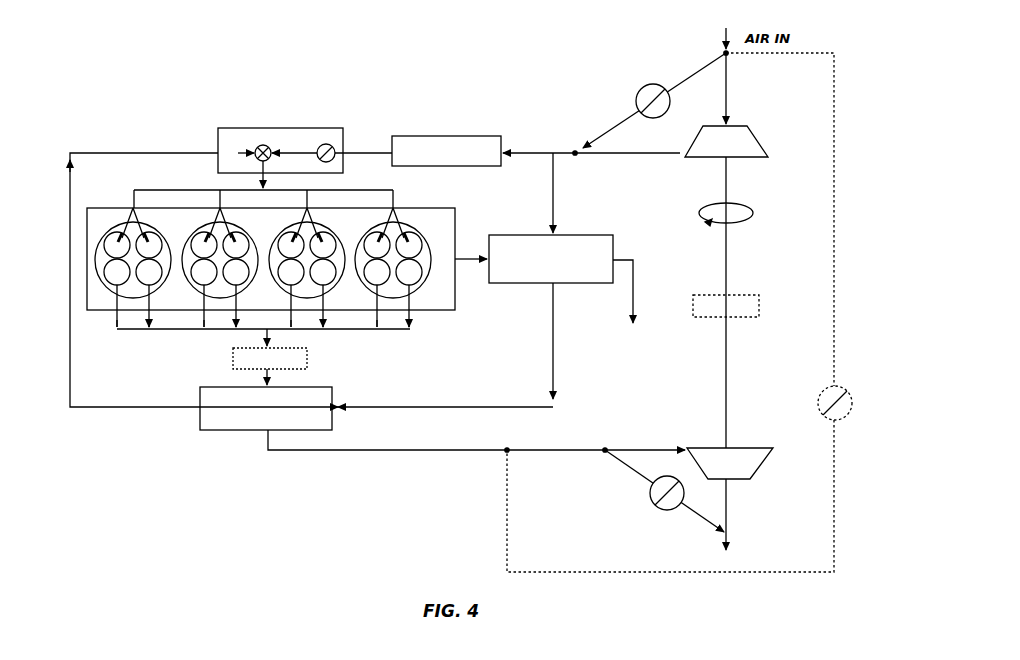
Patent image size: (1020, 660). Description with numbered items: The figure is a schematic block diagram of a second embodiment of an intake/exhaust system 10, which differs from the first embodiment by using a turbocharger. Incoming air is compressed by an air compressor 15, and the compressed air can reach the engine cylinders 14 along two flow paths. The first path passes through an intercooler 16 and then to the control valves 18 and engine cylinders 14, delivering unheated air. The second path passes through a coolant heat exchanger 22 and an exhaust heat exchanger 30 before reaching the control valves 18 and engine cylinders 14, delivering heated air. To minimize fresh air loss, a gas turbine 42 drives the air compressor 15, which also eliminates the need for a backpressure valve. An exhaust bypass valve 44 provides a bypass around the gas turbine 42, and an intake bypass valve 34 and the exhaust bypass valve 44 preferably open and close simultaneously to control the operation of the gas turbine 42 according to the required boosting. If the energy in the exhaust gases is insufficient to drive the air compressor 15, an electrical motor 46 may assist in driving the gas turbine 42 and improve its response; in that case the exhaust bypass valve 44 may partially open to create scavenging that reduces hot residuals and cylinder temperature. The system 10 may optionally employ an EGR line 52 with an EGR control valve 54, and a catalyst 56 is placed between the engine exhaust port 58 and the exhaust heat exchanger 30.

The intake/exhaust system 10 is at (852, 58).
The engine cylinders 14 is at (97, 260).
The air compressor 15 is at (758, 158).
The intercooler 16 is at (452, 136).
The control valves 18 is at (281, 128).
The coolant heat exchanger 22 is at (600, 235).
The exhaust heat exchanger 30 is at (222, 430).
The intake bypass valve 34 is at (648, 84).
The gas turbine 42 is at (750, 480).
The exhaust bypass valve 44 is at (662, 510).
The electrical motor 46 is at (740, 295).
The EGR line 52 is at (834, 224).
The EGR control valve 54 is at (818, 408).
The catalyst 56 is at (307, 362).
The engine exhaust port 58 is at (262, 340).